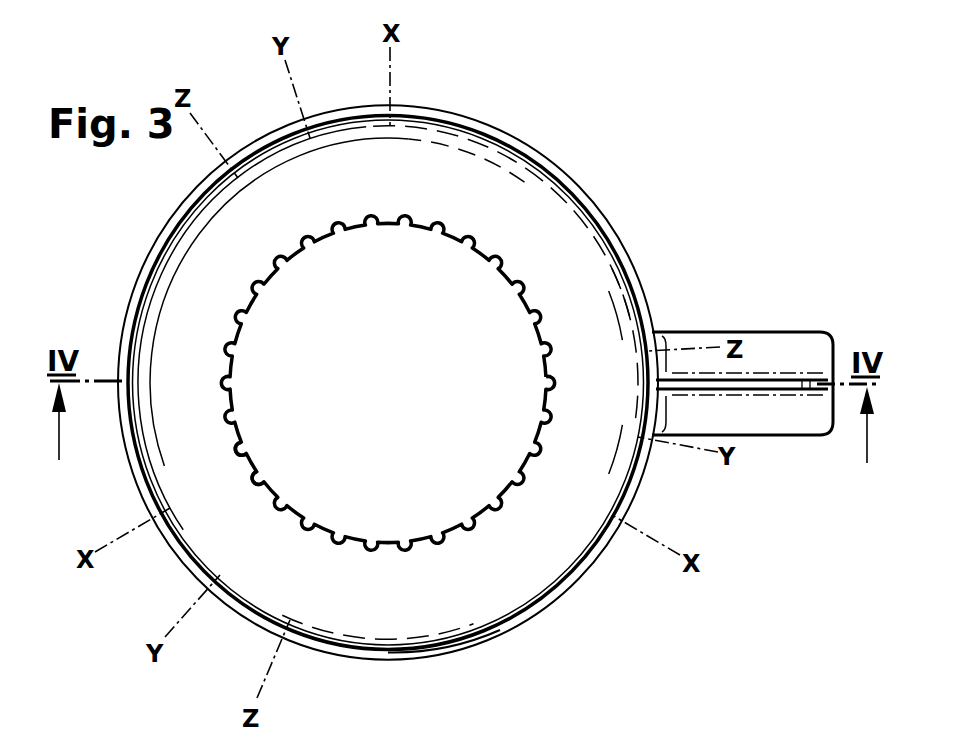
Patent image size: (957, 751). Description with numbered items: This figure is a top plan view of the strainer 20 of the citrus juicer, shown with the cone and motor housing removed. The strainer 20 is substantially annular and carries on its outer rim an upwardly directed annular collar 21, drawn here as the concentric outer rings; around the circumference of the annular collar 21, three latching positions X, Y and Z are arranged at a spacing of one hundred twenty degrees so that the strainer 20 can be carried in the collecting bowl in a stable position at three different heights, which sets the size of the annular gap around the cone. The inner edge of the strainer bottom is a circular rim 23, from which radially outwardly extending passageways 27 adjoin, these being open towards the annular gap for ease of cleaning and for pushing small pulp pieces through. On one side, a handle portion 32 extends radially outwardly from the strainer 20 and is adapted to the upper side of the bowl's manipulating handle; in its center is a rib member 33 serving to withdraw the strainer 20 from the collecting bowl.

The strainer 20 is at (580, 148).
The annular collar 21 is at (497, 633).
The circular rim 23 is at (270, 279).
The passageways 27 is at (240, 448).
The handle portion 32 is at (782, 420).
The rib member 33 is at (768, 383).